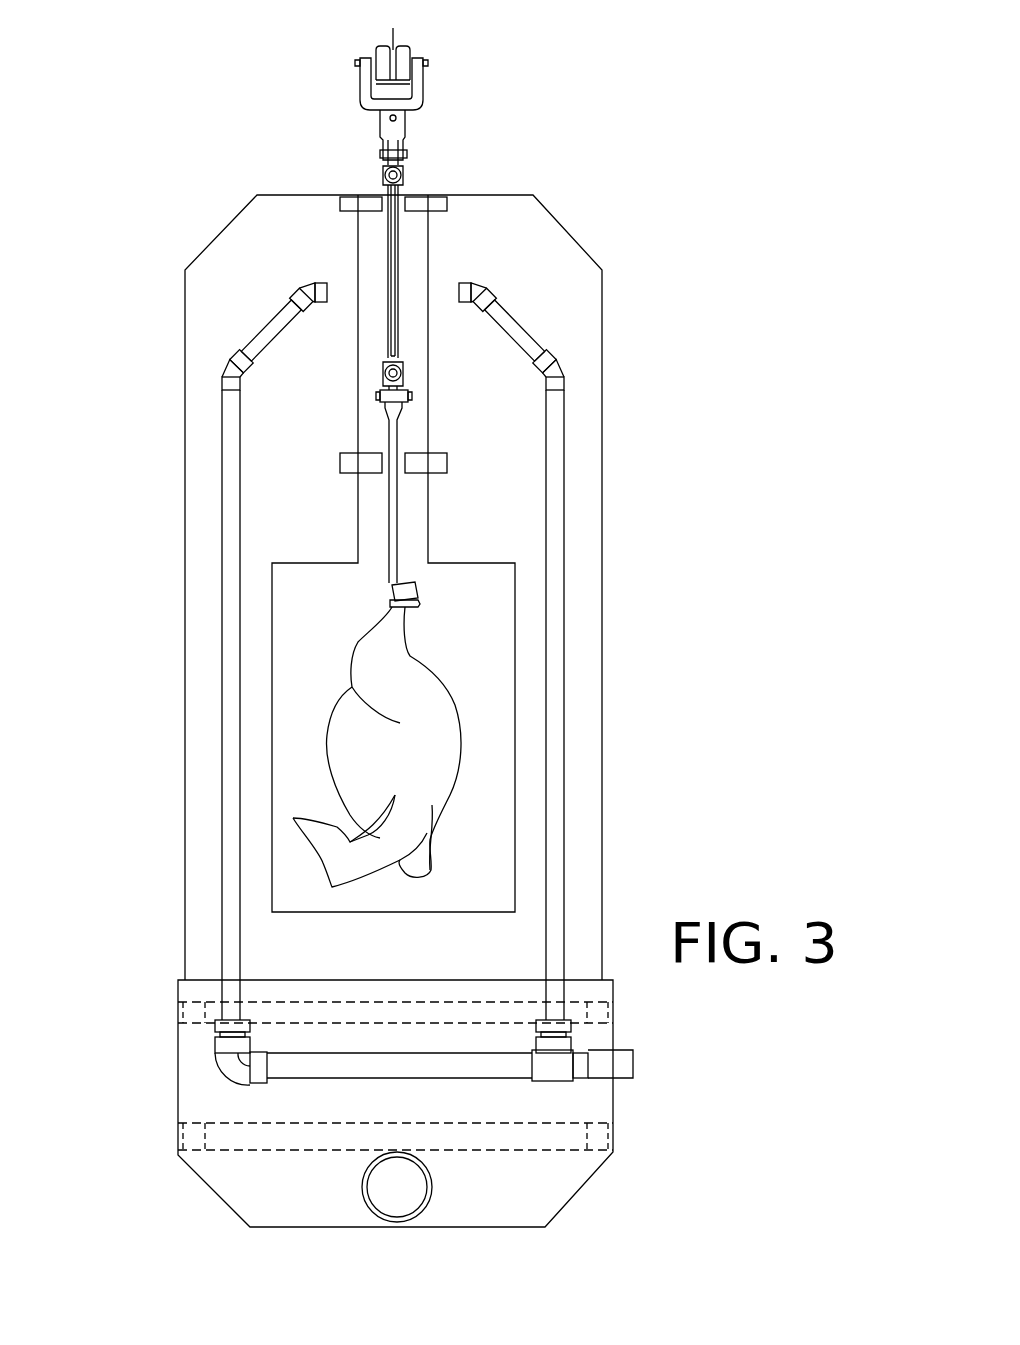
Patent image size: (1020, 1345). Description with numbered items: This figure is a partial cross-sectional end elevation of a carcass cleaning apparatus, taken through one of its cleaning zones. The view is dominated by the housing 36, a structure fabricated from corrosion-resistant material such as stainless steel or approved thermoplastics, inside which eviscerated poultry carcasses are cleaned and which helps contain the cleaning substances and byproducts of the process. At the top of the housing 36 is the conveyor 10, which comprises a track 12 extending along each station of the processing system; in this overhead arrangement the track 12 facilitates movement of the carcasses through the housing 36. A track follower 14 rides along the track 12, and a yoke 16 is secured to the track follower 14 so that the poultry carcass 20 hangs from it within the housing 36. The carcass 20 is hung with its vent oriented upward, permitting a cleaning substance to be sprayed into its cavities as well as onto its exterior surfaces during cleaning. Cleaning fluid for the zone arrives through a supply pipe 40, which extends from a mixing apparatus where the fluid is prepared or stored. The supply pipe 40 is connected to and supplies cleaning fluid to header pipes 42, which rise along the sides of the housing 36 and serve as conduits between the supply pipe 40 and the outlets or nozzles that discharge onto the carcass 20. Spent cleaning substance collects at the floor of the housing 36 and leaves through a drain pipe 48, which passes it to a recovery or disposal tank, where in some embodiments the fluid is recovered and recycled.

The conveyor 10 is at (460, 92).
The track 12 is at (388, 37).
The track follower 14 is at (360, 78).
The yoke 16 is at (398, 525).
The poultry carcass 20 is at (353, 773).
The housing 36 is at (185, 441).
The supply pipe 40 is at (310, 1070).
The header pipe 42 is at (232, 668).
The drain pipe 48 is at (413, 1190).